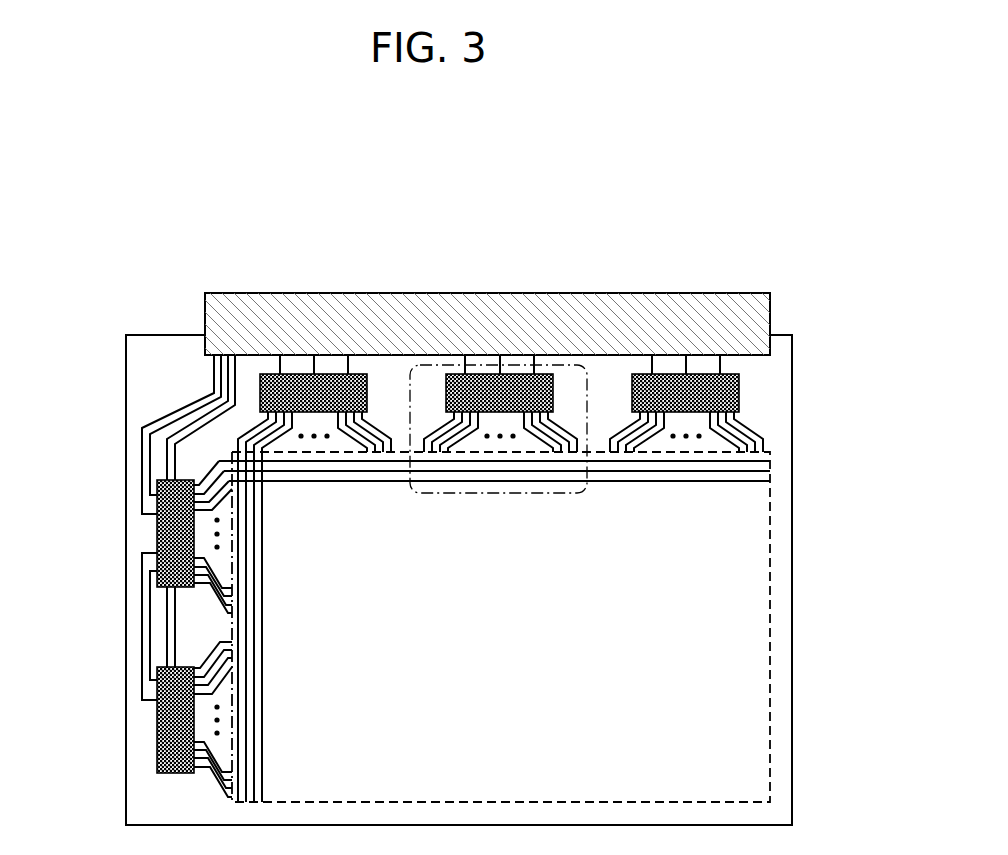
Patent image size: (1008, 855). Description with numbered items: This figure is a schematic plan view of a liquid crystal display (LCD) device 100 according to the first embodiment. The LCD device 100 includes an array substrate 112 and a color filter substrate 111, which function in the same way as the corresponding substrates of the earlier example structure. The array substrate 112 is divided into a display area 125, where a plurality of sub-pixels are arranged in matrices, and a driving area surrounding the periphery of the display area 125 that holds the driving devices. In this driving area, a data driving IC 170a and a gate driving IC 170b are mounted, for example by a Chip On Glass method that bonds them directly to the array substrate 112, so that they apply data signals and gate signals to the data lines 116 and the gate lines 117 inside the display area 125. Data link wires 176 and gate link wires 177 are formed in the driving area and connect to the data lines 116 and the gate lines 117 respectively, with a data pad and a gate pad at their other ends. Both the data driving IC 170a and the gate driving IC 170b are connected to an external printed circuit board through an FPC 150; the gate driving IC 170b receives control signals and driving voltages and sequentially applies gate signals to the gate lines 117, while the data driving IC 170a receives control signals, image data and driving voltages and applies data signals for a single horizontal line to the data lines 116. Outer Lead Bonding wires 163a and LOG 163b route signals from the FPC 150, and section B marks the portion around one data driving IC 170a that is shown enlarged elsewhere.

The liquid crystal display (LCD) device 100 is at (808, 275).
The color filter substrate 111 is at (771, 567).
The array substrate 112 is at (793, 441).
The data lines 116 is at (263, 594).
The gate lines 117 is at (372, 484).
The display area 125 is at (513, 642).
The FPC 150 is at (670, 300).
The Outer Lead Bonding (OLB) wires 163a is at (349, 362).
The LOG 163b is at (140, 477).
The data driving IC 170a is at (300, 385).
The gate driving IC 170b is at (157, 537).
The data link wires 176 is at (252, 431).
The gate link wires 177 is at (222, 592).
The section B is at (515, 357).